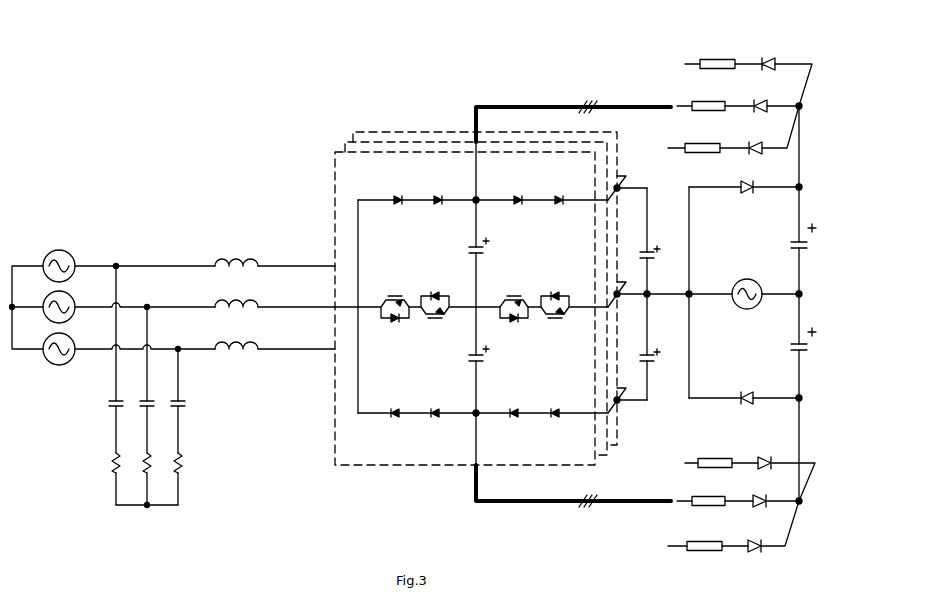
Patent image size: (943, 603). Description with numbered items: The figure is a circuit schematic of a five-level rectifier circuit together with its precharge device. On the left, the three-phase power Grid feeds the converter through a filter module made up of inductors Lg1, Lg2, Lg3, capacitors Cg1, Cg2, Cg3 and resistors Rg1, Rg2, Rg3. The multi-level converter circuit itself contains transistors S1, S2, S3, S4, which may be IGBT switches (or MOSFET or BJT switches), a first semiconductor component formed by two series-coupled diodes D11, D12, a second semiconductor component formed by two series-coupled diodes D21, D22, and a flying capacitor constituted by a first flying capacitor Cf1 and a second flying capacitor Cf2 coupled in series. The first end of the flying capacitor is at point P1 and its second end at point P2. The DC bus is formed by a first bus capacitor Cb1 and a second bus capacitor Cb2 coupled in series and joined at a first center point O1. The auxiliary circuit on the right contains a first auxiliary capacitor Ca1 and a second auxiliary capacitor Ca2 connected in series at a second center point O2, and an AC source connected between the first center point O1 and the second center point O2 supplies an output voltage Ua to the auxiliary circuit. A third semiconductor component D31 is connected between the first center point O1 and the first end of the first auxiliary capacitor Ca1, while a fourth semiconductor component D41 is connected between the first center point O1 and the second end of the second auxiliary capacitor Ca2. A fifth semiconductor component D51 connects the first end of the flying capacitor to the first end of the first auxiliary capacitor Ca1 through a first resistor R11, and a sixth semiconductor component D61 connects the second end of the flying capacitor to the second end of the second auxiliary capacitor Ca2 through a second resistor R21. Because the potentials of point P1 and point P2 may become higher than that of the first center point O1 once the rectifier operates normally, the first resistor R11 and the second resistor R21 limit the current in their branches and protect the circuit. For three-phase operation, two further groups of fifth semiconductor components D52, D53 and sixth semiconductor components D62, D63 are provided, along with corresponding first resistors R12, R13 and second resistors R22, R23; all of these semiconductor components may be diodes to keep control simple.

The three-phase grid Grid is at (43, 302).
The inductor Lg1 is at (236, 335).
The inductor Lg2 is at (236, 293).
The grid-side inductor Lg3 is at (236, 252).
The capacitor Cg1 is at (189, 395).
The capacitor Cg2 is at (157, 395).
The capacitor Cg3 is at (126, 395).
The resistor Rg1 is at (190, 456).
The resistor Rg2 is at (159, 456).
The resistor Rg3 is at (128, 456).
The transistor S1 is at (395, 299).
The transistor S2 is at (435, 297).
The transistor S3 is at (514, 299).
The transistor S4 is at (555, 297).
The first semiconductor component D11 is at (518, 190).
The first semiconductor component D12 is at (558, 190).
The second semiconductor component D21 is at (556, 424).
The second semiconductor component D22 is at (513, 424).
The first flying capacitor Cf1 is at (488, 248).
The second flying capacitor Cf2 is at (488, 356).
The point P1 is at (468, 206).
The point P2 is at (468, 405).
The first bus capacitor Cb1 is at (640, 248).
The second bus capacitor Cb2 is at (640, 352).
The first center point O1 is at (666, 303).
The second center point O2 is at (810, 303).
The output voltage Ua is at (744, 286).
The third semiconductor component D31 is at (748, 180).
The fourth semiconductor component D41 is at (748, 391).
The first auxiliary capacitor Ca1 is at (790, 239).
The second auxiliary capacitor Ca2 is at (790, 342).
The first resistor R11 is at (702, 139).
The first resistor R12 is at (708, 97).
The first resistor R13 is at (717, 55).
The second resistor R21 is at (704, 537).
The second resistor R22 is at (708, 493).
The second resistor R23 is at (715, 454).
The fifth semiconductor component D51 is at (756, 140).
The fifth semiconductor component D52 is at (763, 98).
The fifth semiconductor component D53 is at (771, 56).
The sixth semiconductor component D61 is at (758, 538).
The sixth semiconductor component D62 is at (763, 493).
The sixth semiconductor component D63 is at (768, 455).